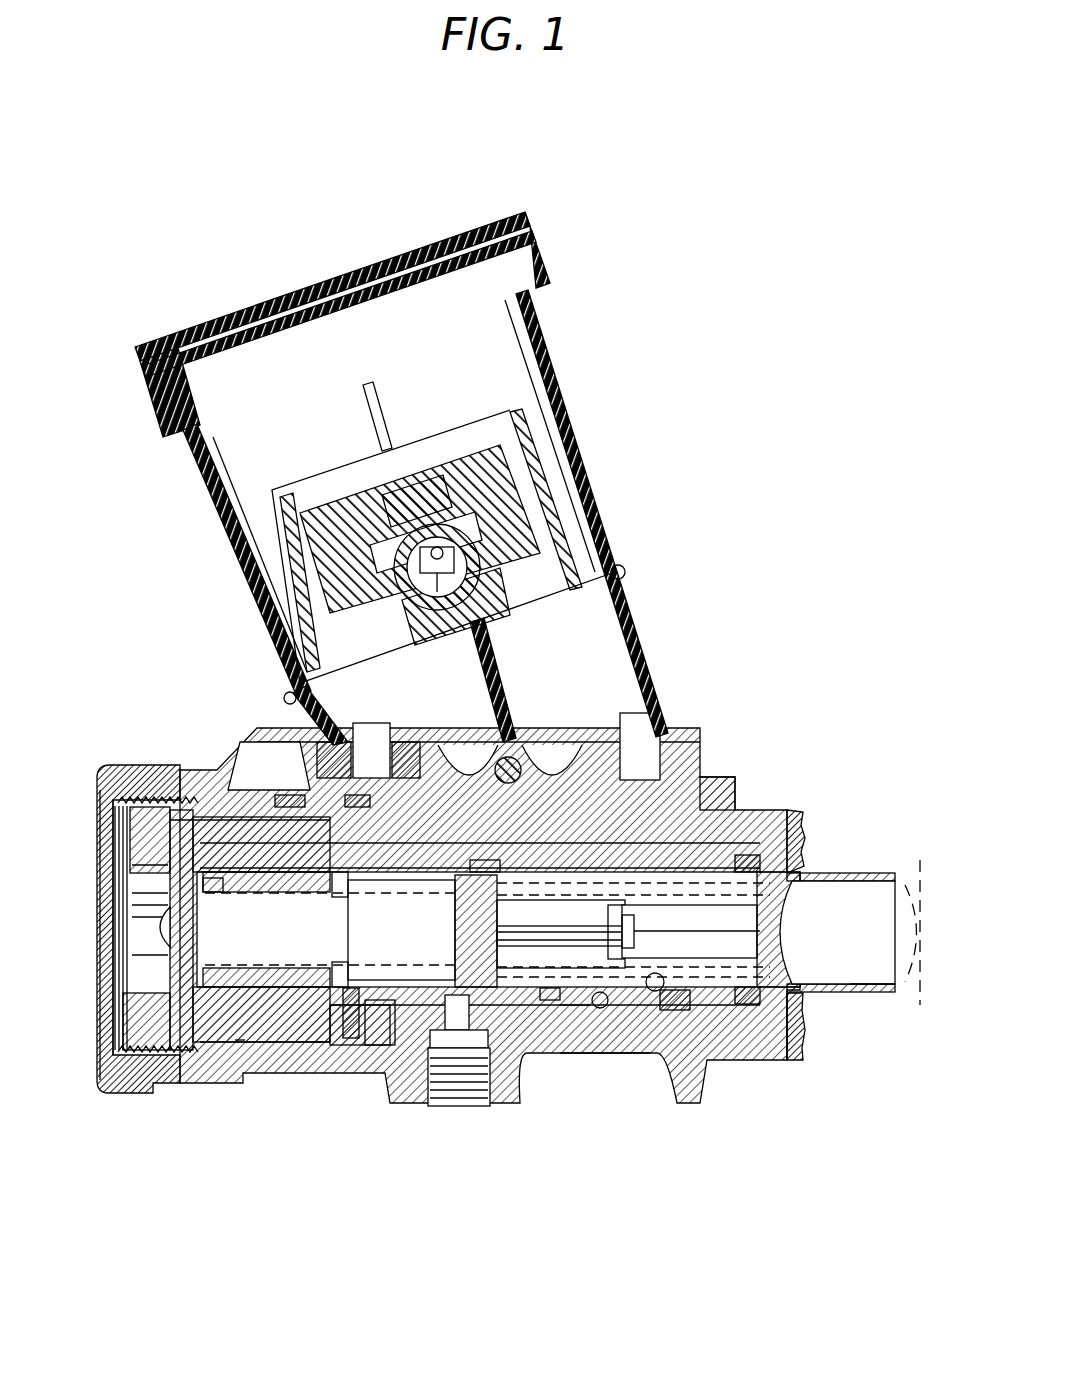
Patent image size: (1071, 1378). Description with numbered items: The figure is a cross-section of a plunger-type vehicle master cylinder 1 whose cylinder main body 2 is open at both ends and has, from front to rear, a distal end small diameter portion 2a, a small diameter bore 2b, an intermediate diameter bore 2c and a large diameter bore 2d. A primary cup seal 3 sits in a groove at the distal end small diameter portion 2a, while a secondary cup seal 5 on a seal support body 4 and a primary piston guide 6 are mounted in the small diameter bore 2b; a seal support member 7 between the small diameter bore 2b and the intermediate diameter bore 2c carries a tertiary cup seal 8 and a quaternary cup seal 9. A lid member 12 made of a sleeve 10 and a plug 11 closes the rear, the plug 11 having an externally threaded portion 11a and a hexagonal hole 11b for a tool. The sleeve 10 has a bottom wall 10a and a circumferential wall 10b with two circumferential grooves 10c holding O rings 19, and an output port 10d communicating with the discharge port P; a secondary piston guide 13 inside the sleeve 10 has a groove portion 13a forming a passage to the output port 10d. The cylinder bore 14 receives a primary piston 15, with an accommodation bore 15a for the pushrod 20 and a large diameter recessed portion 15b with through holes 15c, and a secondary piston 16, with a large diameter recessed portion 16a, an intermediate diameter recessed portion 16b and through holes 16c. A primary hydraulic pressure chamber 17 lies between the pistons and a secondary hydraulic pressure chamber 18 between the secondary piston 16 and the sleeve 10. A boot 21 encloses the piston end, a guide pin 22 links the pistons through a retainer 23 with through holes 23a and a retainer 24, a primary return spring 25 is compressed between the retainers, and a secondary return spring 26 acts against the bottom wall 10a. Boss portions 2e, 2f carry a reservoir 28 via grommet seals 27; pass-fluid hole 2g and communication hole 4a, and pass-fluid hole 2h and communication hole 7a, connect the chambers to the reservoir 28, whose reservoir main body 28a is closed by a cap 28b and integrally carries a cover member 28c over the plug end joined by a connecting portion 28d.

The master cylinder 1 is at (626, 254).
The cylinder main body 2 is at (495, 1108).
The distal end small diameter portion 2a is at (800, 1000).
The small diameter bore 2b is at (610, 1050).
The intermediate diameter bore 2c is at (332, 1040).
The large diameter bore 2d is at (112, 848).
The boss portion 2e is at (590, 752).
The boss portion 2f is at (428, 745).
The pass-fluid hole 2g is at (700, 790).
The pass-fluid hole 2h is at (374, 725).
The primary cup seal 3 is at (770, 850).
The seal support body 4 is at (735, 1040).
The communication hole 4a is at (735, 855).
The secondary cup seal 5 is at (680, 1000).
The primary piston guide 6 is at (596, 1010).
The seal support member 7 is at (428, 1050).
The communication hole 7a is at (372, 1048).
The tertiary cup seal 8 is at (408, 975).
The quaternary cup seal 9 is at (350, 1040).
The sleeve 10 is at (210, 830).
The bottom wall 10a is at (185, 880).
The circumferential wall 10b is at (183, 1060).
The circumferential groove 10c is at (240, 1040).
The output port 10d is at (275, 805).
The plug 11 is at (138, 790).
The externally threaded portion 11a is at (130, 1093).
The hexagonal hole 11b is at (125, 975).
The lid member 12 is at (207, 726).
The secondary piston guide 13 is at (300, 875).
The groove portion 13a is at (212, 885).
The cylinder bore 14 is at (550, 1000).
The primary piston 15 is at (862, 868).
The accommodation bore 15a is at (875, 992).
The large diameter recessed portion 15b is at (610, 978).
The through holes 15c is at (686, 900).
The secondary piston 16 is at (540, 760).
The large diameter recessed portion 16a is at (492, 870).
The intermediate diameter recessed portion 16b is at (340, 965).
The through holes 16c is at (345, 880).
The primary hydraulic pressure chamber 17 is at (573, 1010).
The secondary hydraulic pressure chamber 18 is at (222, 1045).
The O ring 19 is at (280, 800).
The pushrod 20 is at (908, 872).
The boot 21 is at (803, 820).
The guide pin 22 is at (562, 925).
The retainer 23 is at (738, 904).
The through holes 23a is at (620, 905).
The retainer 24 is at (457, 950).
The primary return spring 25 is at (792, 945).
The secondary return spring 26 is at (150, 975).
The grommet seal 27 is at (405, 720).
The reservoir 28 is at (400, 245).
The reservoir main body 28a is at (572, 420).
The cap 28b is at (198, 330).
The cover member 28c is at (100, 830).
The connecting portion 28d is at (250, 755).
The discharge port P is at (318, 919).